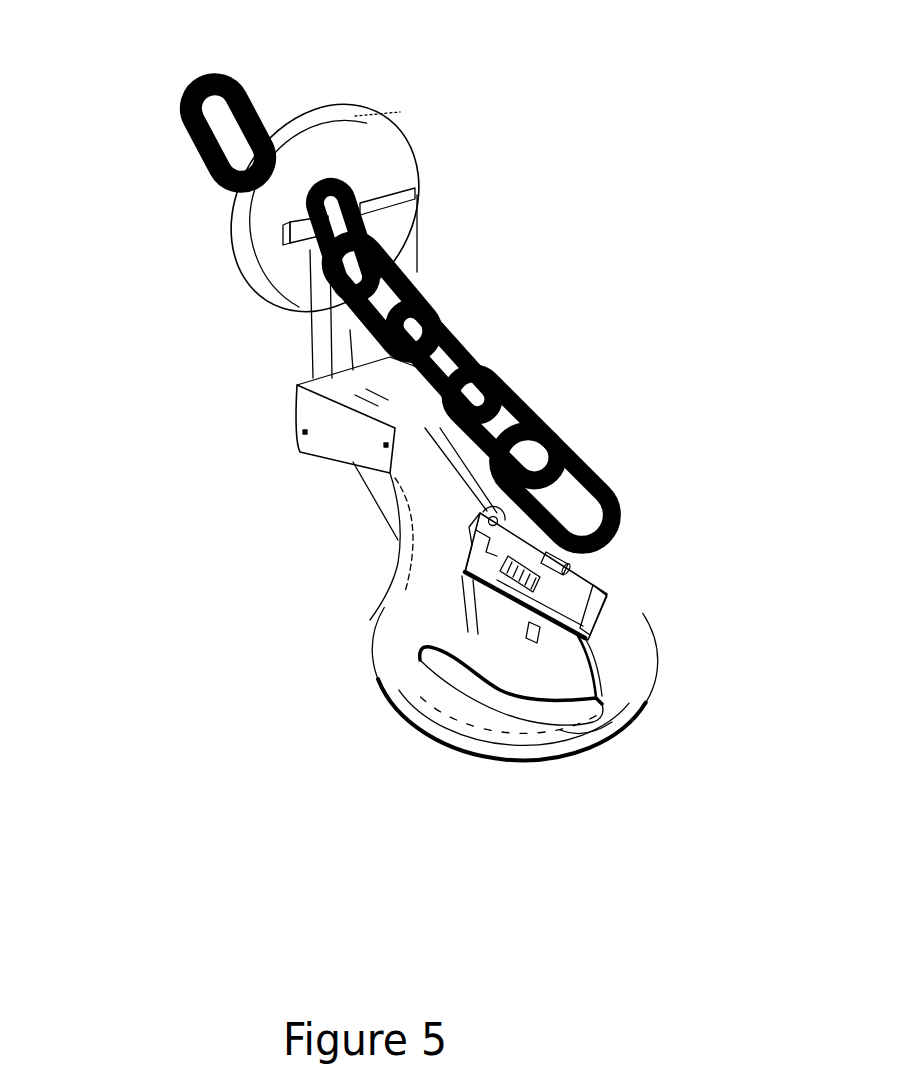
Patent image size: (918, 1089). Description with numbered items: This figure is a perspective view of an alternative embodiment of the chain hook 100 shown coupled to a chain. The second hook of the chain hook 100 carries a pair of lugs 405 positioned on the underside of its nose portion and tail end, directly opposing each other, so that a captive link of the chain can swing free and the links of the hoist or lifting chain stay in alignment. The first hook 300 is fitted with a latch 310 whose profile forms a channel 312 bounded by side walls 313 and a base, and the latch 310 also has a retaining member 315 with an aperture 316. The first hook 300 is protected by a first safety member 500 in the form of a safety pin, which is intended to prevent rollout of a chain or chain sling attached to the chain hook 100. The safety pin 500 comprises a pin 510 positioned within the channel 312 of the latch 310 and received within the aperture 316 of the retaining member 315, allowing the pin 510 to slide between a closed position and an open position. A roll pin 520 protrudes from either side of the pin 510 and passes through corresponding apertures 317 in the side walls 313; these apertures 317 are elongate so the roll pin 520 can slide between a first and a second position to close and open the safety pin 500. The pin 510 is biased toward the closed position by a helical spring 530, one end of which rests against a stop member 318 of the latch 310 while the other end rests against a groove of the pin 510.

The chain hook 100 is at (552, 276).
The lugs 405 is at (300, 227).
The side walls 313 is at (585, 470).
The apertures 317 is at (610, 507).
The roll pin 520 is at (570, 563).
The latch 310 is at (587, 578).
The pin 510 is at (598, 618).
The channel 312 is at (468, 558).
The stop member 318 is at (468, 578).
The helical spring 530 is at (462, 670).
The first safety member 500 is at (492, 640).
The retaining member 315 is at (585, 705).
The aperture 316 is at (633, 728).
The first hook 300 is at (645, 708).